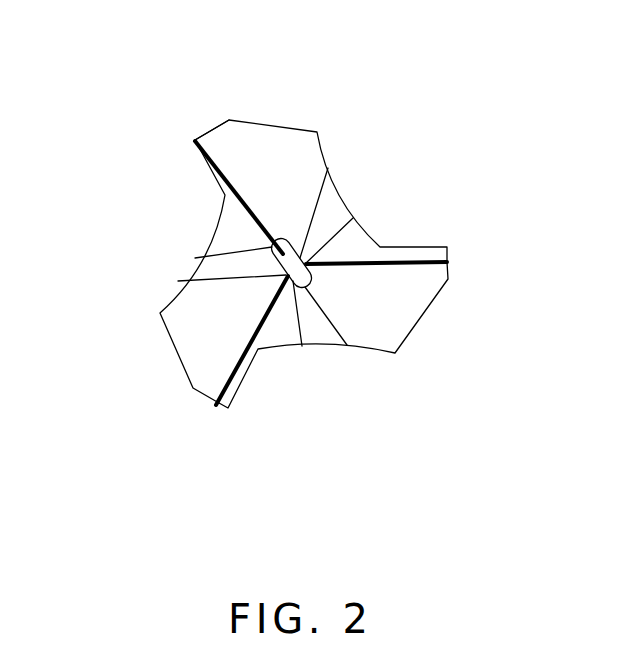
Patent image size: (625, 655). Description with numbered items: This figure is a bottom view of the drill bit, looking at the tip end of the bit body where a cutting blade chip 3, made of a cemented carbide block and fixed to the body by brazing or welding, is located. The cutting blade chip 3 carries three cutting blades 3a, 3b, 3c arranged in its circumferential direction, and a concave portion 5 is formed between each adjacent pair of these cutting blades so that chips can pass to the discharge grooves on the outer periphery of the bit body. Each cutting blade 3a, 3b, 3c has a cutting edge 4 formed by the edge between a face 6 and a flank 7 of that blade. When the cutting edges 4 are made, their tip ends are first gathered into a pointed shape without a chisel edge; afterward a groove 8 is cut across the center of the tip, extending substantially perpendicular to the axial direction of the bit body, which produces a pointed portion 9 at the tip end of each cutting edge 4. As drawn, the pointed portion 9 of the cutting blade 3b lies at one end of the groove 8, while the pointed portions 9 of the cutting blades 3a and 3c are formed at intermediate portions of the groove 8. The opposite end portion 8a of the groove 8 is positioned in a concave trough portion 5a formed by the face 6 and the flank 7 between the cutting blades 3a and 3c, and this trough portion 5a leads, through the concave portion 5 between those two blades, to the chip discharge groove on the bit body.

The cutting blade chip 3 is at (277, 125).
The cutting blade 3a is at (448, 274).
The cutting blade 3b is at (218, 127).
The cutting blade 3c is at (207, 397).
The cutting edge 4 is at (250, 193).
The concave portion 5 is at (283, 353).
The concave (trough) portion 5a is at (330, 335).
The face 6 is at (373, 255).
The flank 7 is at (410, 300).
The groove 8 is at (301, 258).
The opposite end portion of the groove 8a is at (310, 281).
The pointed portion 9 is at (304, 288).